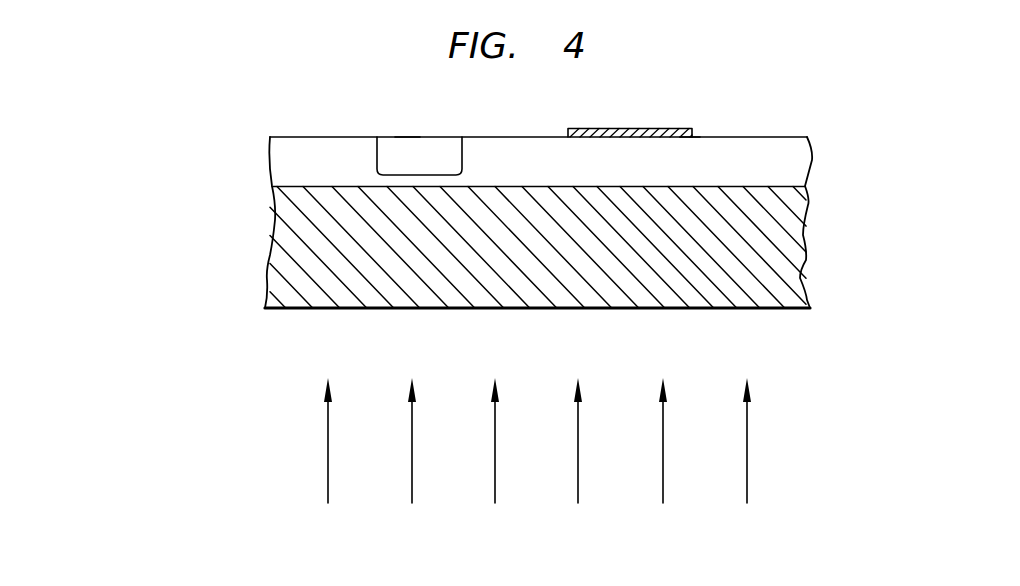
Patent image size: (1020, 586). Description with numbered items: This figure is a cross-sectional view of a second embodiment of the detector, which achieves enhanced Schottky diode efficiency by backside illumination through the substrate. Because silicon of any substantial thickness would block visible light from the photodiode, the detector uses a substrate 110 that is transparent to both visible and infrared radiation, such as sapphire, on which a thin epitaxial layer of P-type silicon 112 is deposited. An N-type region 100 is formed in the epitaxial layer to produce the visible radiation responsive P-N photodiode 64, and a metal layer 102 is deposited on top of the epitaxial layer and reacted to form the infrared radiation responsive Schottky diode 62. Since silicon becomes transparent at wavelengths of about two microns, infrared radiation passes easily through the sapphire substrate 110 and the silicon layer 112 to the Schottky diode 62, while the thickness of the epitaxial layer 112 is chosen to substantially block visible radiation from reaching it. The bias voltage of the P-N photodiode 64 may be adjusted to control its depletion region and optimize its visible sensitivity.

The infrared radiation responsive element 62 is at (687, 112).
The P-N photodiode 64 is at (408, 130).
The N-type region 100 is at (462, 163).
The metal layer 102 is at (625, 128).
The substrate 110 is at (805, 278).
The epitaxial layer of P-type silicon 112 is at (285, 175).